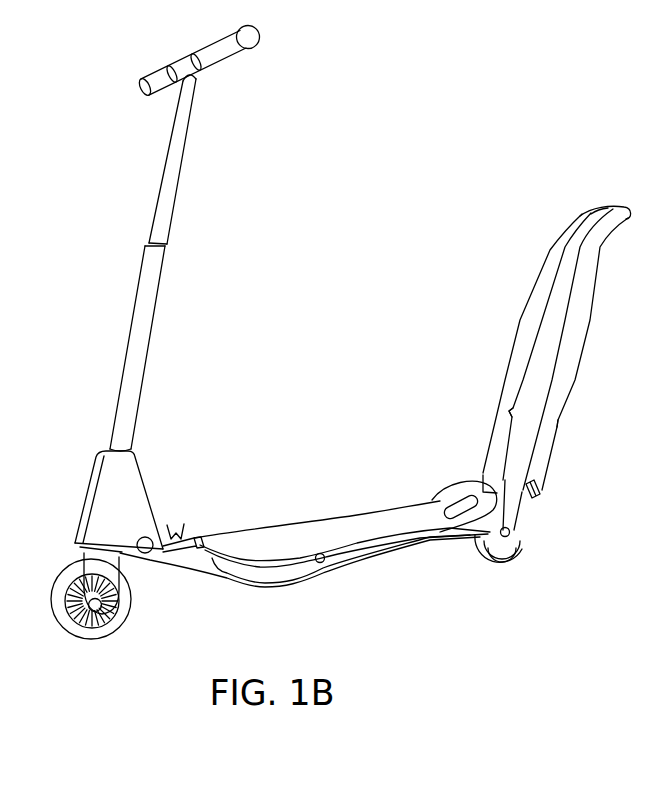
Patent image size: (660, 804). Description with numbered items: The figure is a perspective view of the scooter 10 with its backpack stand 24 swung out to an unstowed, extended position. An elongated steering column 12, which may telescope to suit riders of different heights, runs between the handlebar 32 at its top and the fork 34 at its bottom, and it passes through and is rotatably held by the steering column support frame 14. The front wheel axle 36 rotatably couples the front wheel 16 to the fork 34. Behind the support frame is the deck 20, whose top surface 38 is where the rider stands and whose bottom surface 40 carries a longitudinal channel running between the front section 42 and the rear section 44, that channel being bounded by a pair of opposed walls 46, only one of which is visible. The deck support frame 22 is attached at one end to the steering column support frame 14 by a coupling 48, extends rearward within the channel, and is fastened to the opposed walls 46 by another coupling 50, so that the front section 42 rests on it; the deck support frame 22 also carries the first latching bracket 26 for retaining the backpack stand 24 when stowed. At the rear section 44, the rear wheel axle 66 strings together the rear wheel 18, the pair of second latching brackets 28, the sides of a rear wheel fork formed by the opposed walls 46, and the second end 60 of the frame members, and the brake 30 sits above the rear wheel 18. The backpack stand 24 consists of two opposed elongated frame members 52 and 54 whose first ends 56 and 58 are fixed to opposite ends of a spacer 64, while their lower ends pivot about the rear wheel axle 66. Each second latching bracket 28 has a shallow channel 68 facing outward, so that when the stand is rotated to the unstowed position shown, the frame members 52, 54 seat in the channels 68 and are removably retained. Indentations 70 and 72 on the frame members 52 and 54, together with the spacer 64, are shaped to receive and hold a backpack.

The scooter 10 is at (396, 218).
The steering column 12 is at (166, 268).
The steering column support frame 14 is at (84, 485).
The front wheel 16 is at (68, 636).
The rear wheel 18 is at (518, 557).
The deck 20 is at (370, 483).
The deck support frame 22 is at (185, 570).
The backpack stand 24 is at (497, 302).
The first latching bracket 26 is at (176, 518).
The second latching brackets 28 is at (490, 474).
The brake 30 is at (455, 500).
The handlebar 32 is at (158, 80).
The fork 34 is at (88, 548).
The front wheel axle 36 is at (106, 638).
The top surface 38 is at (287, 524).
The bottom surface 40 is at (369, 565).
The front section 42 is at (200, 538).
The rear section 44 is at (483, 486).
The opposed walls 46 is at (274, 585).
The coupling 48 is at (147, 553).
The coupling 50 is at (322, 563).
The frame member 52 is at (598, 292).
The frame member 54 is at (540, 265).
The first end 56 is at (618, 207).
The first end 58 is at (580, 217).
The second end 60 is at (518, 530).
The spacer 64 is at (594, 196).
The rear wheel axle 66 is at (494, 560).
The shallow channel 68 is at (537, 495).
The indentation 70 is at (564, 428).
The indentation 72 is at (516, 410).